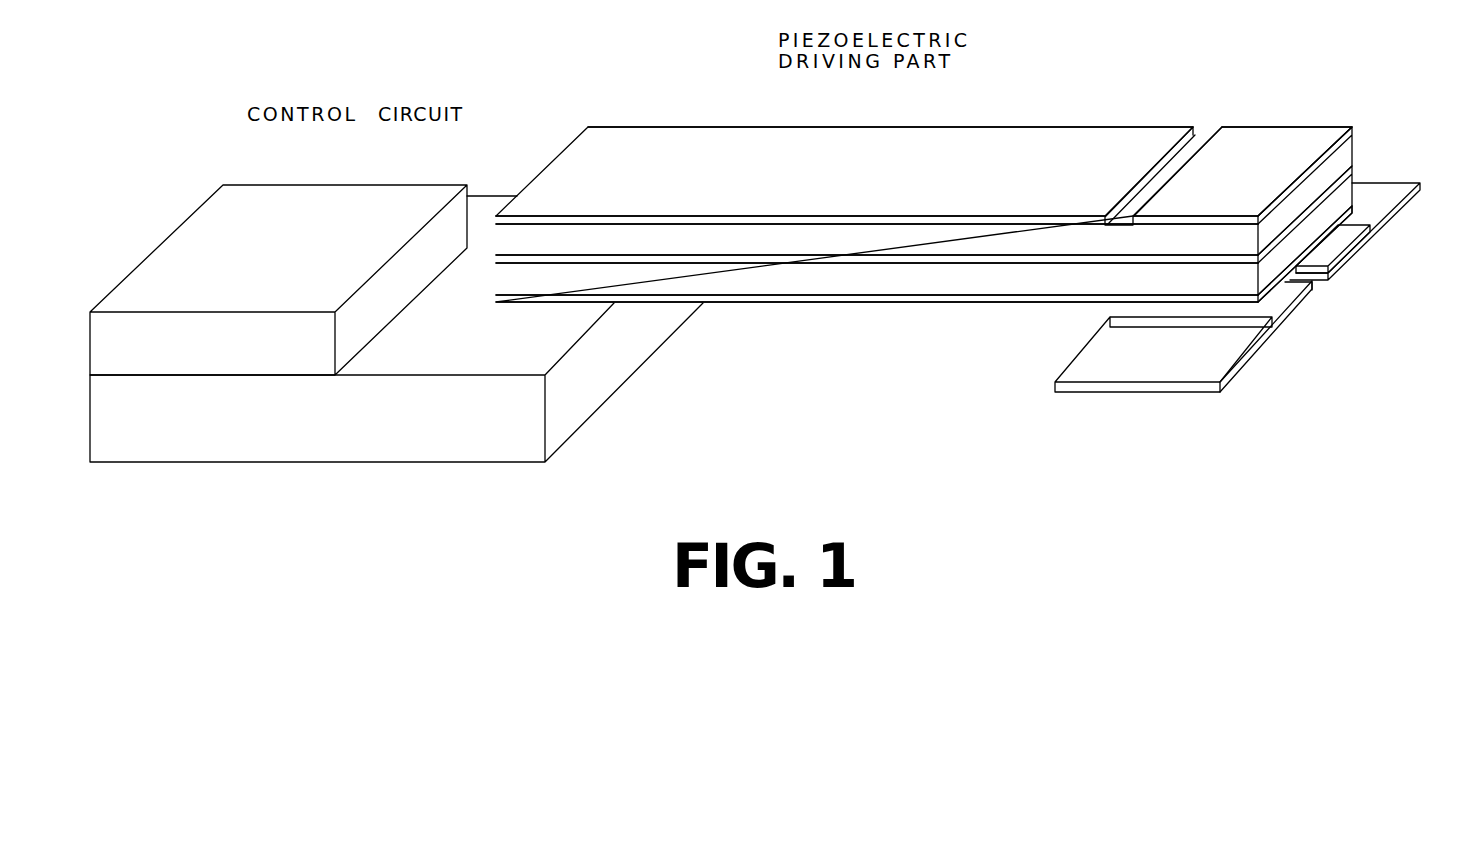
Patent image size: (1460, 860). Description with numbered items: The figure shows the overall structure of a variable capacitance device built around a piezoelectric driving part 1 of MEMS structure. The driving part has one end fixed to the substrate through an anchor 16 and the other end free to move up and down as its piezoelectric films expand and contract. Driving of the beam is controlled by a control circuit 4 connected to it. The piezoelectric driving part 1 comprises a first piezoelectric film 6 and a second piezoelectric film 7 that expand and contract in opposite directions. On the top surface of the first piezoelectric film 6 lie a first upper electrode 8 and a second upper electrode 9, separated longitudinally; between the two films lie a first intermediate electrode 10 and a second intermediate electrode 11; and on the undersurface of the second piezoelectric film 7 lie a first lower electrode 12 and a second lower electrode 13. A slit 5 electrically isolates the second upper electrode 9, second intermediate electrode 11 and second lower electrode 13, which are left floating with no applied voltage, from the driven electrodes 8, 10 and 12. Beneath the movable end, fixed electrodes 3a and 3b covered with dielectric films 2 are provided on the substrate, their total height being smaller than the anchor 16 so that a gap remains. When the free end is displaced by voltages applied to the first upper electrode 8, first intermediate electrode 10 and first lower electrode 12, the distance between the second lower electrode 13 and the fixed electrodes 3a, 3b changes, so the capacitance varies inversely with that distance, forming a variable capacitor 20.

The piezoelectric driving part 1 is at (791, 138).
The dielectric films 2 is at (1285, 293).
The fixed electrode 3a is at (1220, 355).
The fixed electrode 3b is at (1377, 192).
The control circuit 4 is at (310, 205).
The slit 5 is at (1198, 142).
The first piezoelectric film 6 is at (730, 242).
The second piezoelectric film 7 is at (822, 278).
The first upper electrode 8 is at (1042, 150).
The second upper electrode 9 is at (1250, 148).
The first intermediate electrode 10 is at (910, 260).
The second intermediate electrode 11 is at (1347, 177).
The first lower electrode 12 is at (1002, 299).
The second lower electrode 13 is at (1352, 212).
The anchor 16 is at (380, 433).
The variable capacitor 20 is at (1285, 309).